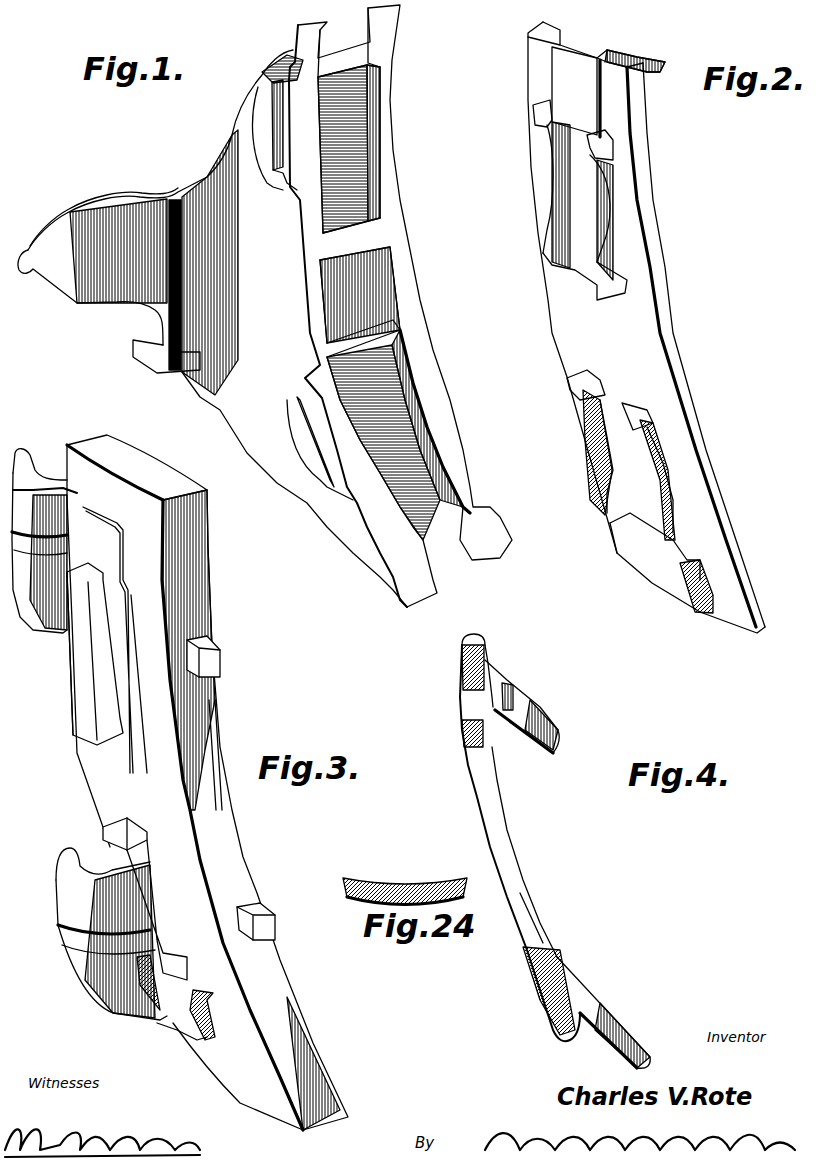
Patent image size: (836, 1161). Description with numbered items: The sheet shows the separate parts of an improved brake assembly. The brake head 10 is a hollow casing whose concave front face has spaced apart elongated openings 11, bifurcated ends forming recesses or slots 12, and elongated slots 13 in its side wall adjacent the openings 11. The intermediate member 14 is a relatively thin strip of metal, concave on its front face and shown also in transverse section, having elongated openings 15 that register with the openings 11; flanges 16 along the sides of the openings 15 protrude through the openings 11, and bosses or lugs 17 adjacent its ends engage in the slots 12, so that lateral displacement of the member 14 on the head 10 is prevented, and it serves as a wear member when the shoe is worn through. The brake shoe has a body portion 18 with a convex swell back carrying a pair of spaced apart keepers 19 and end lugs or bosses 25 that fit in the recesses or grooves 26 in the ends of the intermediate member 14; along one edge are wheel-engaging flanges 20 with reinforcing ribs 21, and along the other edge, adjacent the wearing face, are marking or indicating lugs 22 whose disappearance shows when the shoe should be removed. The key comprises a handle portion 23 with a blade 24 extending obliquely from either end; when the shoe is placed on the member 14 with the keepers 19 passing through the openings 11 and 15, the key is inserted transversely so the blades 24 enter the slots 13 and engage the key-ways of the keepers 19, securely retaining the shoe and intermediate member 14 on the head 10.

In FIG. 1, the brake head 10 is at (231, 137).
In FIG. 1, the elongated openings 11 is at (362, 128).
In FIG. 1, the recesses or slots 12 is at (353, 33).
In FIG. 1, the elongated slots 13 is at (265, 73).
In FIG. 2, the intermediate member 14 is at (635, 237).
In FIG. 24, the intermediate member 14 is at (405, 881).
In FIG. 2, the elongated openings 15 is at (590, 185).
In FIG. 2, the flanges 16 is at (610, 147).
In FIG. 2, the bosses or lugs 17 is at (603, 55).
In FIG. 3, the body portion 18 is at (75, 667).
In FIG. 3, the keepers 19 is at (107, 837).
In FIG. 3, the wheel-engaging flanges 20 is at (30, 457).
In FIG. 3, the reinforcing ribs 21 is at (75, 952).
In FIG. 3, the marking or indicating lugs 22 is at (220, 657).
In FIG. 4, the handle portion 23 is at (498, 825).
In FIG. 4, the blade 24 is at (549, 720).
In FIG. 3, the end lugs or bosses 25 is at (123, 525).
In FIG. 2, the recesses or grooves 26 is at (587, 52).